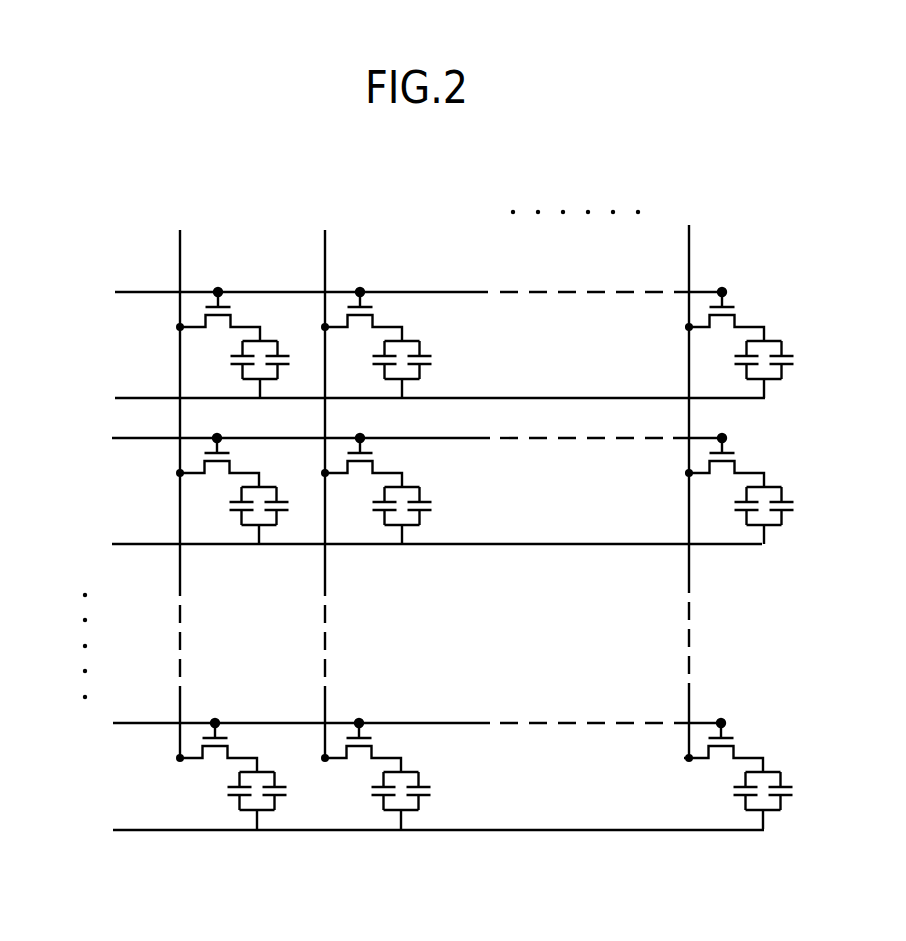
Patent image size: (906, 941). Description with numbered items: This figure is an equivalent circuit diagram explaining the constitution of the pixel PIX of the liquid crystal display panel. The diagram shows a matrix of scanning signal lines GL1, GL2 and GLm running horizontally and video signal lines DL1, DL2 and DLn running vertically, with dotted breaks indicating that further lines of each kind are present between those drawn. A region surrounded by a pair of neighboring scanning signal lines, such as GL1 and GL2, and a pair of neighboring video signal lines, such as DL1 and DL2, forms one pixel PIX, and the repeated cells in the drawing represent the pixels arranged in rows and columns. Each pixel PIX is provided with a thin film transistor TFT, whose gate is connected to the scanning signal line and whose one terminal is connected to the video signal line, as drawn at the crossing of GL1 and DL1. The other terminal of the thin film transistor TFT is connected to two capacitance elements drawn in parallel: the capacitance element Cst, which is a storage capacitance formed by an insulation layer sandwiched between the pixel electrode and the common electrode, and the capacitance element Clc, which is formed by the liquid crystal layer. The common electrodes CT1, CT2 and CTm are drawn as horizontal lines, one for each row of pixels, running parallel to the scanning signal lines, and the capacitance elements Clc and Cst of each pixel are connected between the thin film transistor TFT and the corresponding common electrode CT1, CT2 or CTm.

The thin film transistor TFT is at (188, 263).
The pixel PIX is at (197, 271).
The video signal line DL1 is at (175, 479).
The video signal line DL2 is at (321, 479).
The video signal line DLn is at (683, 479).
The scanning signal line GL1 is at (391, 292).
The scanning signal line GL2 is at (392, 438).
The scanning signal line GLm is at (388, 724).
The common electrode CT1 is at (412, 399).
The common electrode CT2 is at (412, 546).
The common electrode CTm is at (408, 832).
The capacitance element Clc is at (226, 360).
The capacitance element Cst is at (291, 360).